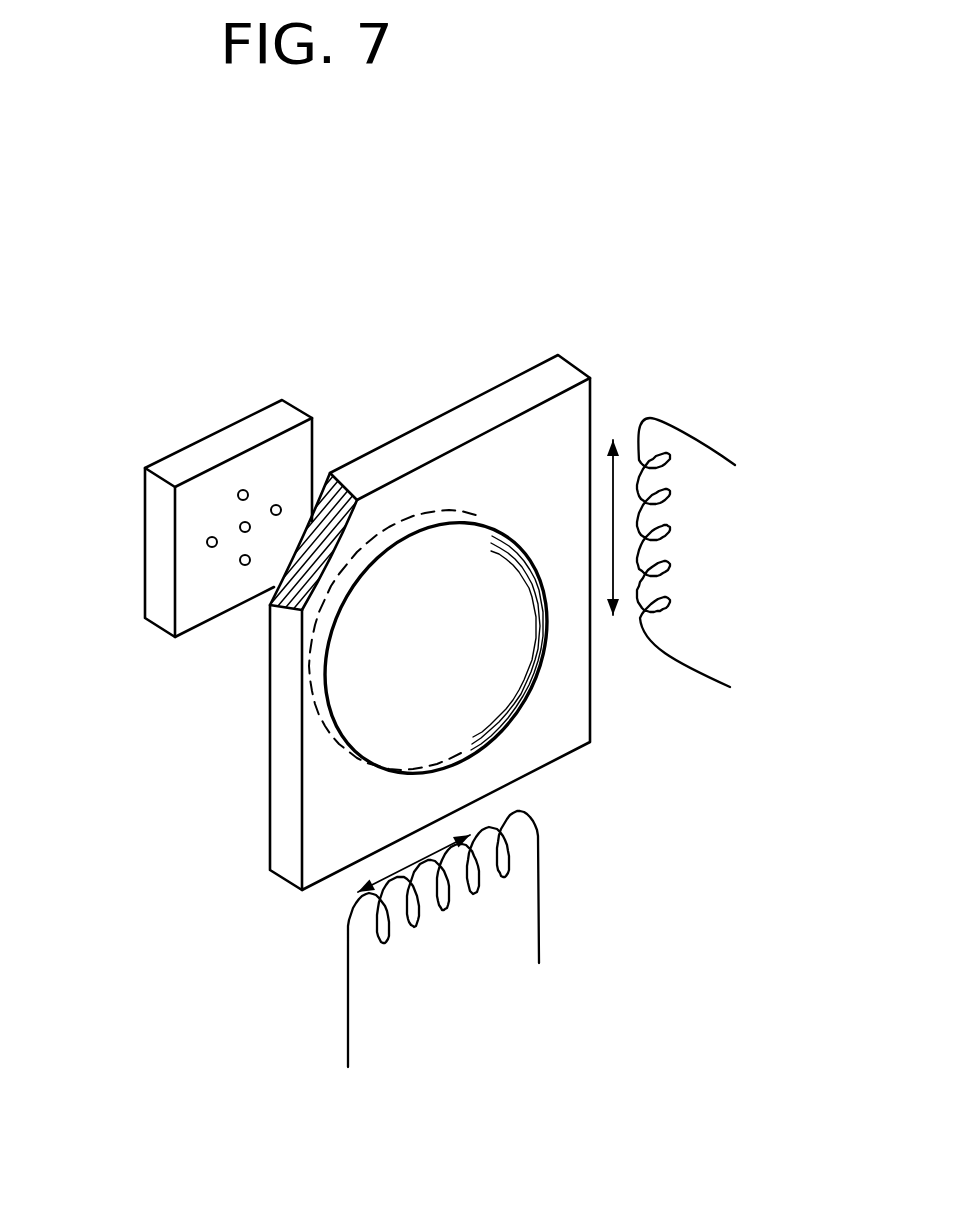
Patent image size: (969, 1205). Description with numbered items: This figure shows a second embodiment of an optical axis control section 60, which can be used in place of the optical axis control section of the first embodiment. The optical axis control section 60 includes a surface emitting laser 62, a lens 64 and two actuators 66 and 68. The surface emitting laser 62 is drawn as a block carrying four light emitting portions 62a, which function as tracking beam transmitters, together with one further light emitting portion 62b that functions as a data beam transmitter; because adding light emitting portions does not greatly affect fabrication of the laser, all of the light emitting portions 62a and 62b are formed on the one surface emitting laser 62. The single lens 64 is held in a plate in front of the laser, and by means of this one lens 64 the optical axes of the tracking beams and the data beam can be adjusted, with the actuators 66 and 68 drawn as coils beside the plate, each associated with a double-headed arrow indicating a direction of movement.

The optical axis control section 60 is at (563, 290).
The surface emitting laser 62 is at (215, 431).
The light emitting portions 62a is at (240, 490).
The light emitting portion 62b is at (243, 533).
The lens 64 is at (493, 733).
The actuator 66 is at (448, 928).
The actuator 68 is at (675, 552).